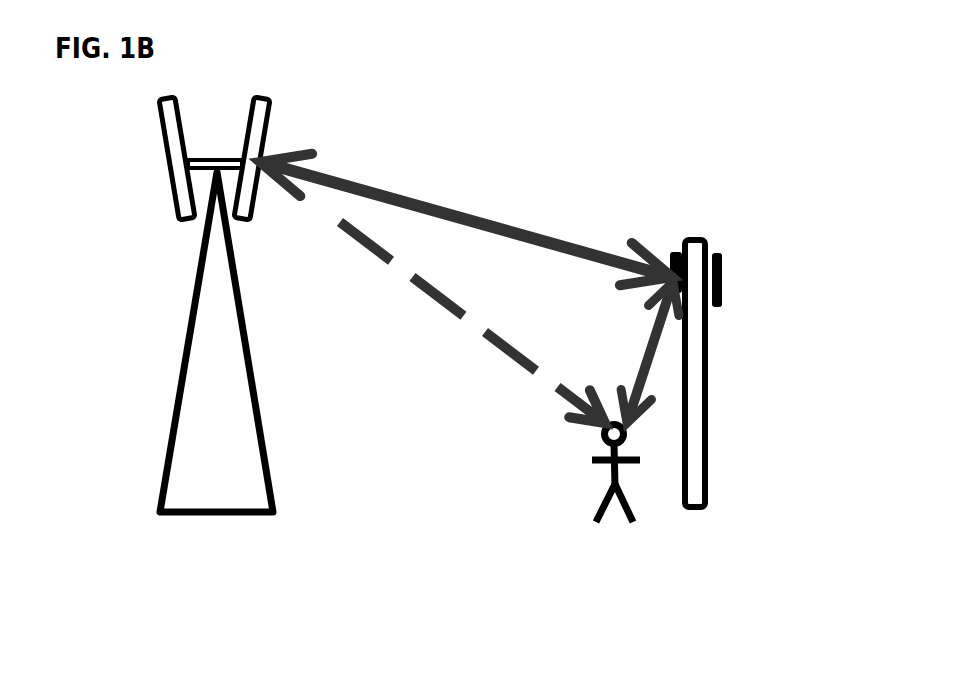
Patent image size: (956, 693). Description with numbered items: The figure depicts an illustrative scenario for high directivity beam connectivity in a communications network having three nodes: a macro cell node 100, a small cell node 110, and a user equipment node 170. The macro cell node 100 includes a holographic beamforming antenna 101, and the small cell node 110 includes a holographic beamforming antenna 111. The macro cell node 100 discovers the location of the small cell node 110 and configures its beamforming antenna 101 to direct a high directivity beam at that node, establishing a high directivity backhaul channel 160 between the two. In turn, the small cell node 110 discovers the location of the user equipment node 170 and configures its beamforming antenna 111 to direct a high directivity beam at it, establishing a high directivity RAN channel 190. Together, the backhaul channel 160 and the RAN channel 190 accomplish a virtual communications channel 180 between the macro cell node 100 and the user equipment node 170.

The macro cell node 100 is at (170, 365).
The beamforming antenna 101 is at (263, 83).
The small cell node 110 is at (722, 413).
The beamforming antenna 111 is at (675, 242).
The high directivity backhaul channel 160 is at (440, 197).
The user equipment node 170 is at (600, 478).
The virtual communications channel 180 is at (433, 313).
The high directivity RAN channel 190 is at (627, 357).